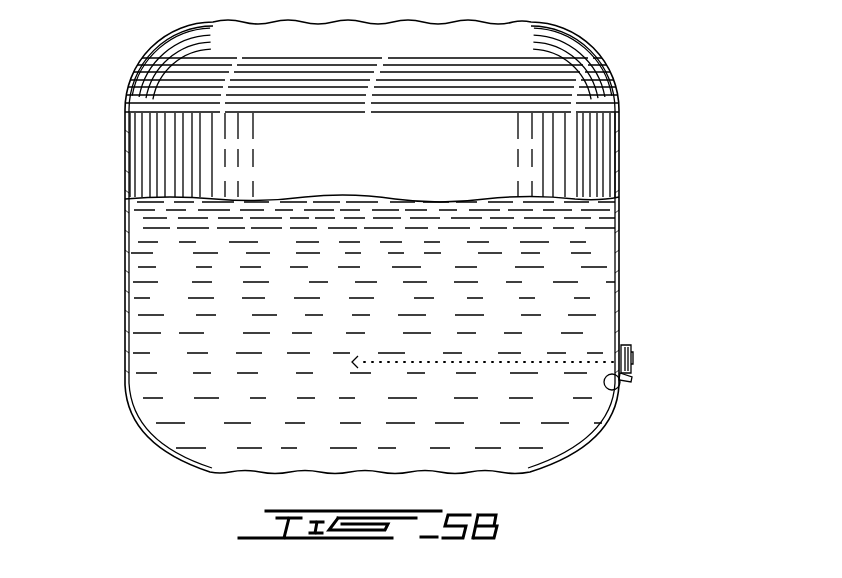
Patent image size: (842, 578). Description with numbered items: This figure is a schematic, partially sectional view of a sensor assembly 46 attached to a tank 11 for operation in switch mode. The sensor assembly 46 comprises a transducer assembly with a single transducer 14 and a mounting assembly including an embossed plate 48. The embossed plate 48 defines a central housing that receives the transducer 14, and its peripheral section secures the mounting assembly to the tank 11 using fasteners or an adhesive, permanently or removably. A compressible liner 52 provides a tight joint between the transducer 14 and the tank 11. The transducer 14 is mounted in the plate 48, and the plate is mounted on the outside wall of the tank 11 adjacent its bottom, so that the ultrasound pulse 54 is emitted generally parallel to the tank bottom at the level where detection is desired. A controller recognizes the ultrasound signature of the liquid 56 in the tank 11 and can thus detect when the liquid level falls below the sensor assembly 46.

The tank 11 is at (620, 130).
The transducer 14 is at (622, 346).
The sensor assembly 46 is at (632, 377).
The embossed plate 48 is at (633, 362).
The compressible liner 52 is at (618, 390).
The ultrasound pulse 54 is at (363, 362).
The liquid 56 is at (196, 260).